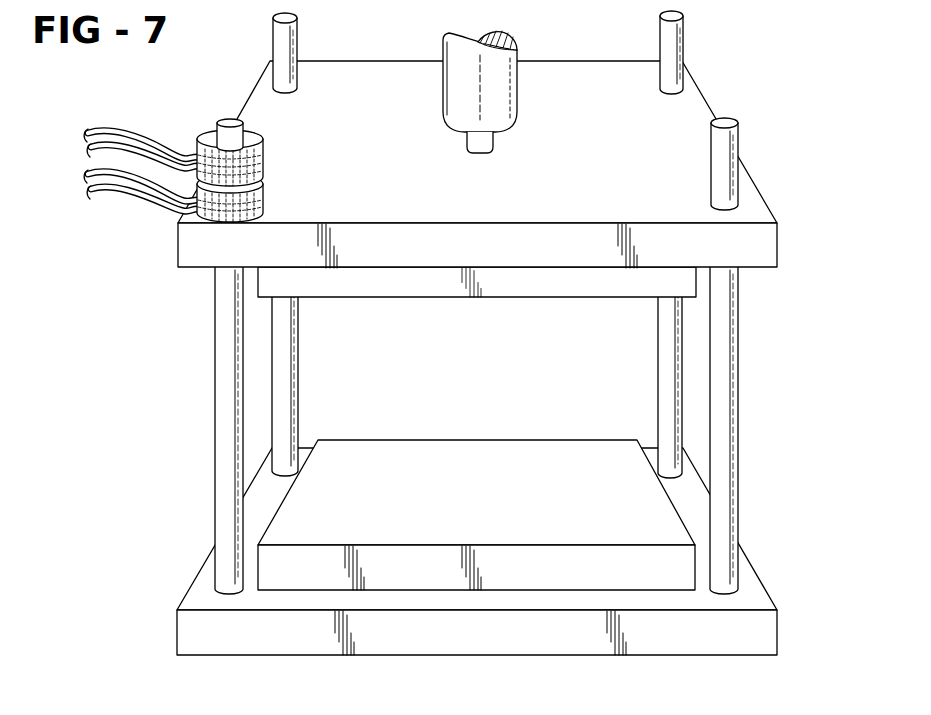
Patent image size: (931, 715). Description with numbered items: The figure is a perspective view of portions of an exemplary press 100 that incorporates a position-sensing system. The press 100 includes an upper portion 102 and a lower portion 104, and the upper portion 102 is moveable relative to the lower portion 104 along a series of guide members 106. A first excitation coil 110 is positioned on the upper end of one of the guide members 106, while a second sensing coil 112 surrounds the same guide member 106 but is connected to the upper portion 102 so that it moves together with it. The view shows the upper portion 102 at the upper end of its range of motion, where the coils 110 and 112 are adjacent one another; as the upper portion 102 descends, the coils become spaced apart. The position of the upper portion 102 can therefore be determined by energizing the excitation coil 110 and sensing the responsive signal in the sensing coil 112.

The press 100 is at (723, 98).
The upper portion 102 is at (500, 77).
The lower portion 104 is at (716, 646).
The guide members 106 is at (224, 430).
The first excitation coil 110 is at (263, 153).
The second sensing coil 112 is at (265, 186).